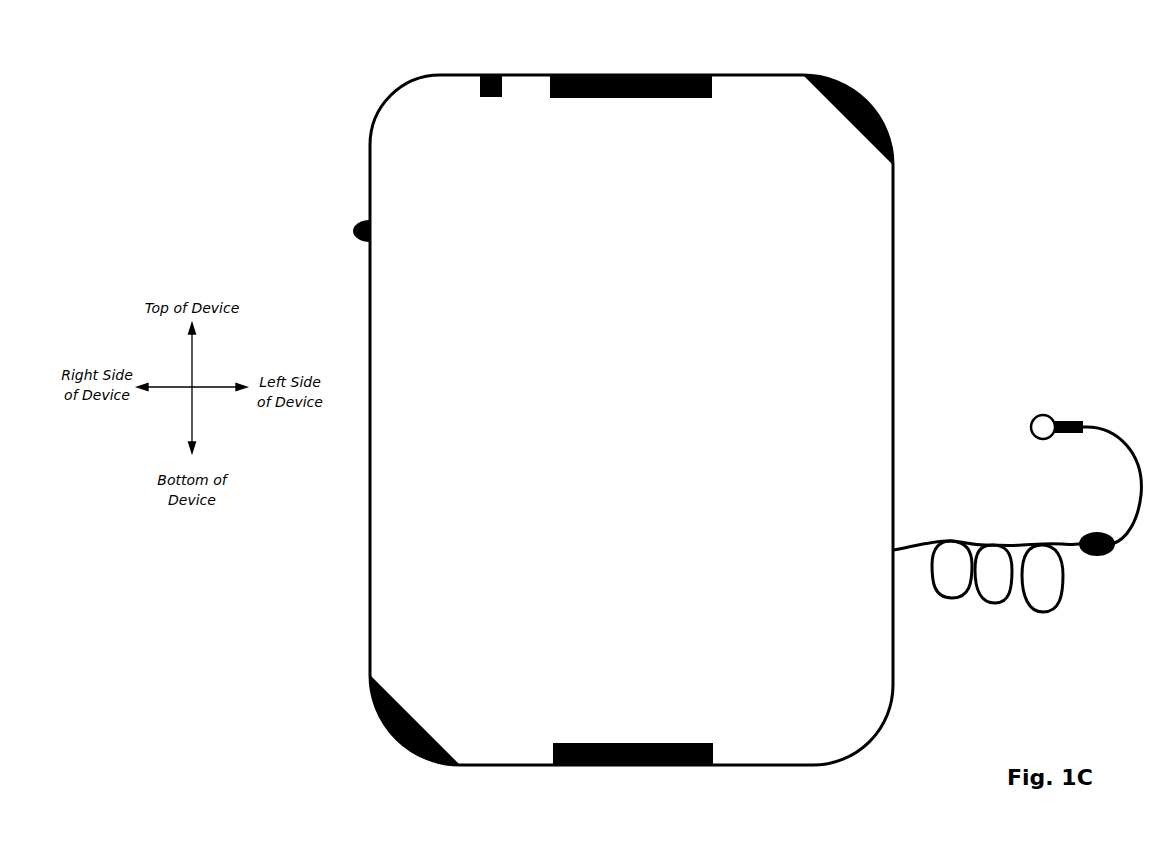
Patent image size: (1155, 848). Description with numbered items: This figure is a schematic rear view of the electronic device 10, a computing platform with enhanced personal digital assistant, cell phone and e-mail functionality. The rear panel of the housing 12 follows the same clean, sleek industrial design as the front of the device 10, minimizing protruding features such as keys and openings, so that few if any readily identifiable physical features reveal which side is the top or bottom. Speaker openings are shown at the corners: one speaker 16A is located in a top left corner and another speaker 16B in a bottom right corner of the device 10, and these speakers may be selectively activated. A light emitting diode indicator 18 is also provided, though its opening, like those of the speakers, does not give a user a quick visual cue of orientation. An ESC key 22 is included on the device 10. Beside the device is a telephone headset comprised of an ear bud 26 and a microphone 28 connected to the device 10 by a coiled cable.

The electronic device 10 is at (451, 531).
The housing 12 is at (753, 334).
The speaker at top left corner 16A is at (788, 63).
The speaker at bottom right corner 16B is at (445, 783).
The light emitting diode (LED) indicator 18 is at (432, 64).
The ESC (escape) key 22 is at (330, 232).
The ear bud 26 is at (1035, 394).
The microphone 28 is at (1069, 520).